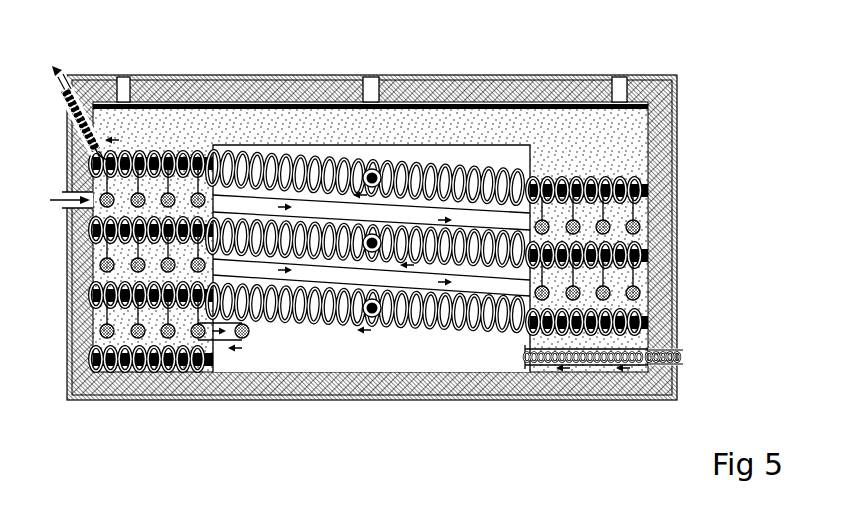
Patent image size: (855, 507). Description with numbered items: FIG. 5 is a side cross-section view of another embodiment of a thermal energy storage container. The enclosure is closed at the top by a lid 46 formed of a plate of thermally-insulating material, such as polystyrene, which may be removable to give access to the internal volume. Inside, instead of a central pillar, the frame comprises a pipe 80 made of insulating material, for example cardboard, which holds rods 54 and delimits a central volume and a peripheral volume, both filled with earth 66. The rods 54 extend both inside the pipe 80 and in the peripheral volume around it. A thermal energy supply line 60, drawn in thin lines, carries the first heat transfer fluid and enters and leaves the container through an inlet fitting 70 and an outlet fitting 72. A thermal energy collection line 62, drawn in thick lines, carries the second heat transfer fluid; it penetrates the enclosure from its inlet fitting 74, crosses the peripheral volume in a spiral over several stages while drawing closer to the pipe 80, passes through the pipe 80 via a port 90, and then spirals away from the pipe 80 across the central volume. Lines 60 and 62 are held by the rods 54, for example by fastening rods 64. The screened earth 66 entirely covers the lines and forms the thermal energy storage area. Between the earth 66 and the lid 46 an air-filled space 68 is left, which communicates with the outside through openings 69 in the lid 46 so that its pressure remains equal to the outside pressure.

The lid 46 is at (249, 90).
The rods 54 is at (202, 372).
The thermal energy supply line 60 is at (598, 364).
The thermal energy collection line 62 is at (641, 293).
The fastening rods 64 is at (641, 227).
The earth 66 is at (622, 150).
The air-filled space 68 is at (528, 107).
The openings 69 is at (124, 88).
The inlet fitting 70 is at (681, 363).
The outlet fitting 72 is at (64, 64).
The inlet fitting 74 is at (82, 205).
The pipe 80 is at (458, 158).
The port 90 is at (250, 341).